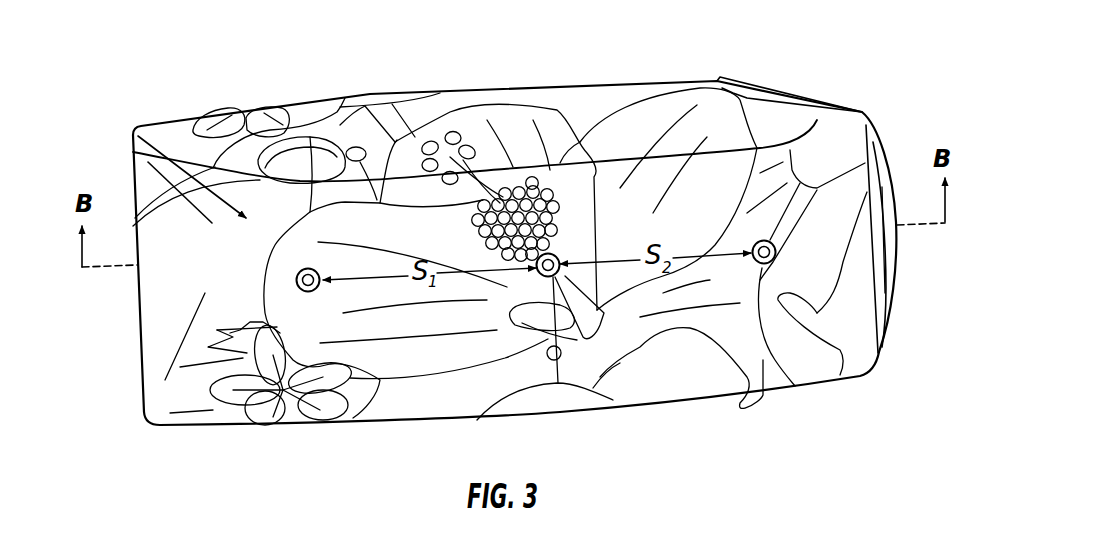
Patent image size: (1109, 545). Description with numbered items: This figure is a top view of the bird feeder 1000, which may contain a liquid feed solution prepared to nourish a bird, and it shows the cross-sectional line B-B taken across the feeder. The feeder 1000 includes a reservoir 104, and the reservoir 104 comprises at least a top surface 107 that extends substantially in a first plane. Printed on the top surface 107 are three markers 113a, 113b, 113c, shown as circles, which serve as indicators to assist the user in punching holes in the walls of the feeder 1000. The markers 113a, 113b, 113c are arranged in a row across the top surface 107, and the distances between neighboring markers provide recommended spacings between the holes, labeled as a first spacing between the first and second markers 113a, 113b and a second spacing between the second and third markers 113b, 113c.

The reservoir 104 is at (140, 100).
The top surface 107 is at (133, 151).
The bird feeder 1000 is at (828, 62).
The marker 113a is at (308, 292).
The marker 113b is at (548, 277).
The marker 113c is at (765, 264).